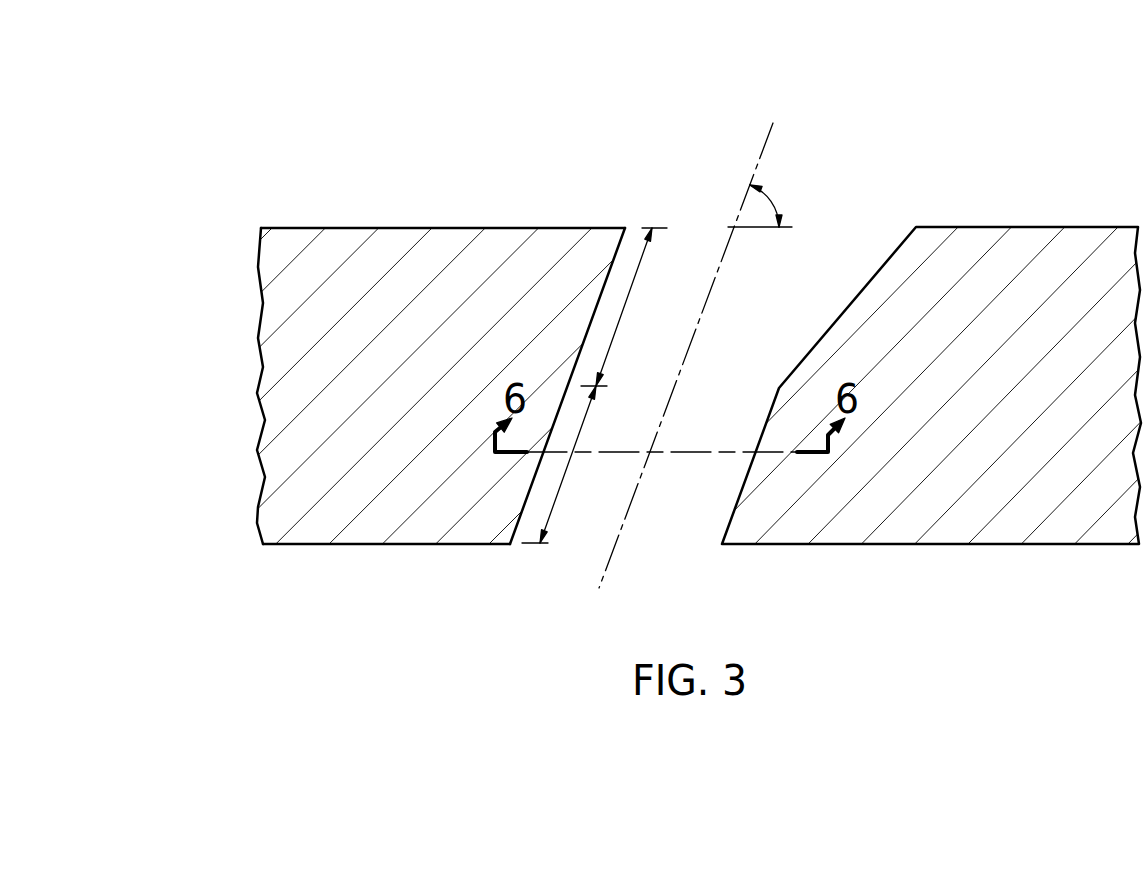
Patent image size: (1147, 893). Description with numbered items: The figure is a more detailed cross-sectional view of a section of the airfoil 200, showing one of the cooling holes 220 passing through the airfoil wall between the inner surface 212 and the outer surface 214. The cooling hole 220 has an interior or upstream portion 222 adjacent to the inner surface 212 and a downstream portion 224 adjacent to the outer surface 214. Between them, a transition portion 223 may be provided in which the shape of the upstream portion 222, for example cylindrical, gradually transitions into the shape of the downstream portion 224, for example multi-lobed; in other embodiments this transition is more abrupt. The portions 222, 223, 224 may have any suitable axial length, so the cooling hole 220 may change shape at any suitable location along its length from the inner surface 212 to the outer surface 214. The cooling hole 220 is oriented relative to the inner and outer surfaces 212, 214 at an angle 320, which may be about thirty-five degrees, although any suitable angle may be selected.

The airfoil 200 is at (573, 303).
The inner surface 212 is at (400, 545).
The outer surface 214 is at (415, 228).
The cooling hole 220 is at (686, 355).
The upstream portion 222 is at (563, 467).
The transition portion 223 is at (608, 383).
The downstream portion 224 is at (628, 300).
The angle 320 is at (781, 205).